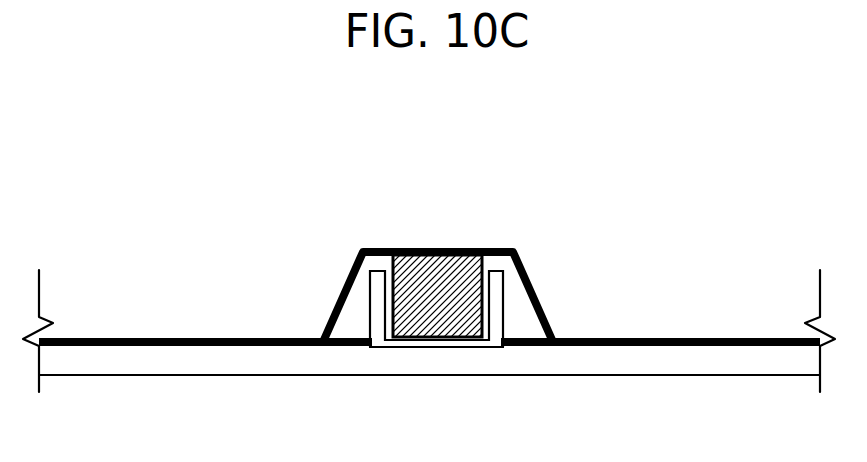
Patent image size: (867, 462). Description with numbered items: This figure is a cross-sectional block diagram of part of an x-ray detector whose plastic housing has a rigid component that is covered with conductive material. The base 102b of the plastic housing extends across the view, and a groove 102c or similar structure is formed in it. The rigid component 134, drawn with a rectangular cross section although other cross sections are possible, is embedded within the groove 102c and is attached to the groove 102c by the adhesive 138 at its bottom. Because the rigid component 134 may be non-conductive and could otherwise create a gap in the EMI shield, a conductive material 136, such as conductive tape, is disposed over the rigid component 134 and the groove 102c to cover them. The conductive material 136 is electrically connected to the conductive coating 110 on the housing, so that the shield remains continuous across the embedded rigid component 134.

The conductive coating 110 is at (190, 338).
The base 102b is at (212, 376).
The groove 102c is at (497, 308).
The rigid component 134 is at (393, 302).
The conductive material 136 is at (383, 249).
The adhesive 138 is at (438, 348).